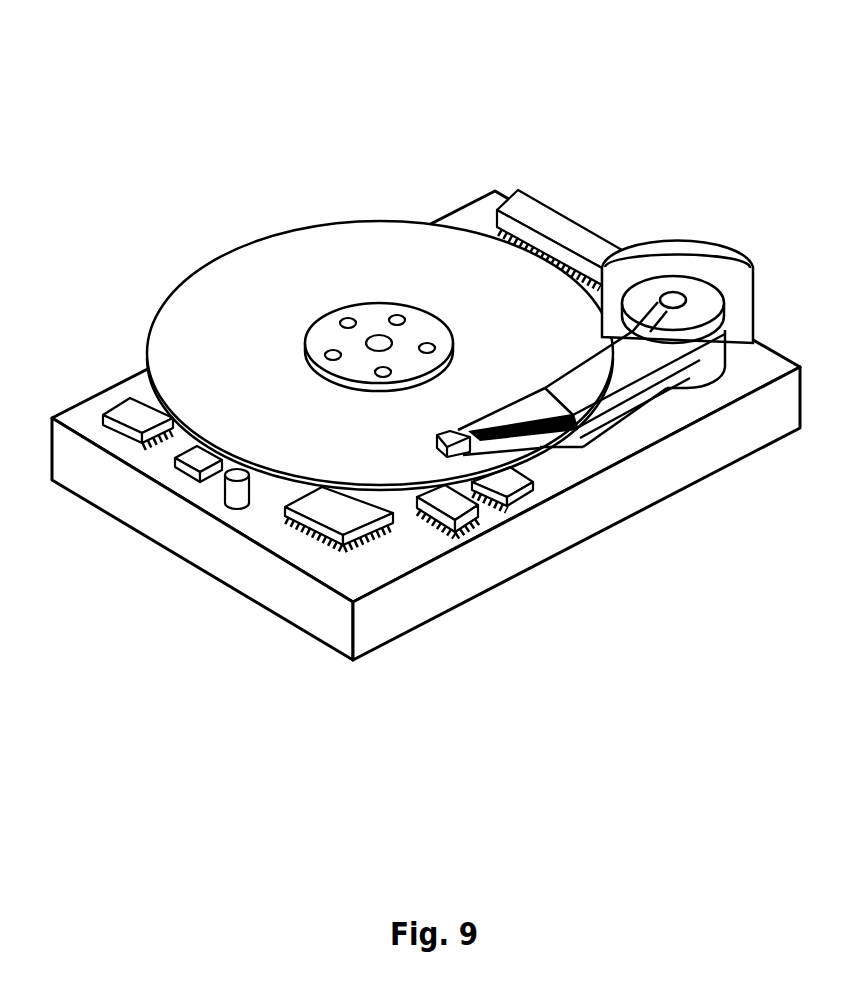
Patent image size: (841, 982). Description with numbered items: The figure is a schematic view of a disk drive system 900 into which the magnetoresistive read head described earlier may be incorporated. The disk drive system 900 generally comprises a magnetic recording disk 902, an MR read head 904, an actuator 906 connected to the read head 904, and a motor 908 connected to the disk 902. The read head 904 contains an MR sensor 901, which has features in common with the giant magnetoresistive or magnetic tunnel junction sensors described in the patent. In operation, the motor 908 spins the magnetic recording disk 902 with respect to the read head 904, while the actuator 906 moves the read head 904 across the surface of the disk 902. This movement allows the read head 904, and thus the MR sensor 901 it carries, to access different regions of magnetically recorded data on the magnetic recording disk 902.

The disk drive system 900 is at (592, 108).
The MR sensor 901 is at (445, 455).
The magnetic recording disk 902 is at (220, 378).
The MR read head 904 is at (457, 453).
The actuator 906 is at (653, 362).
The motor 908 is at (378, 343).